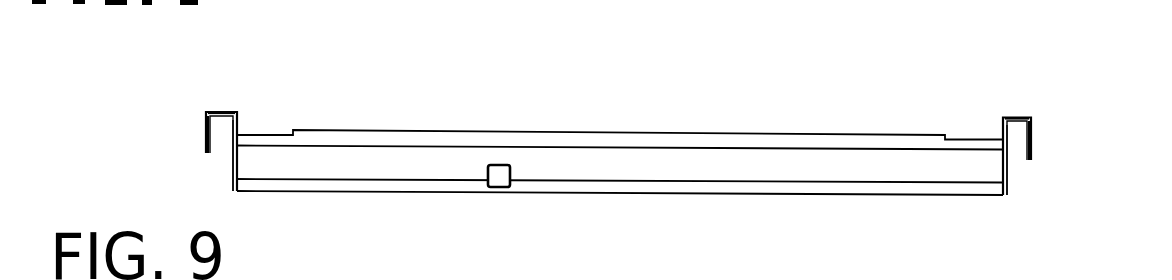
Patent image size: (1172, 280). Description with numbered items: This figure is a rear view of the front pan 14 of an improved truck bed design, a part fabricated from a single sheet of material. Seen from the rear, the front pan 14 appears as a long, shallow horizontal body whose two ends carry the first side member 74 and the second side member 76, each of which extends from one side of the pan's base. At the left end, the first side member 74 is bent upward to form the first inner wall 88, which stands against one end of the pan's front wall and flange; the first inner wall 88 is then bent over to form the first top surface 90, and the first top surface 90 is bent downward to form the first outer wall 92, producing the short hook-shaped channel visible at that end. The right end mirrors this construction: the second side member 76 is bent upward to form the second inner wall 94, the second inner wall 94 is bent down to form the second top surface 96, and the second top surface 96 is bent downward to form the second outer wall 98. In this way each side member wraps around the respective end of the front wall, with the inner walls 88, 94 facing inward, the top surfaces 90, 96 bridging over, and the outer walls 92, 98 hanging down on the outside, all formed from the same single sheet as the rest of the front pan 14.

The front pan 14 is at (715, 101).
The first side member 74 is at (237, 92).
The second side member 76 is at (1025, 100).
The first inner wall 88 is at (237, 158).
The first top surface 90 is at (223, 106).
The first outer wall 92 is at (205, 137).
The second inner wall 94 is at (1003, 177).
The second top surface 96 is at (1013, 116).
The second outer wall 98 is at (1032, 138).